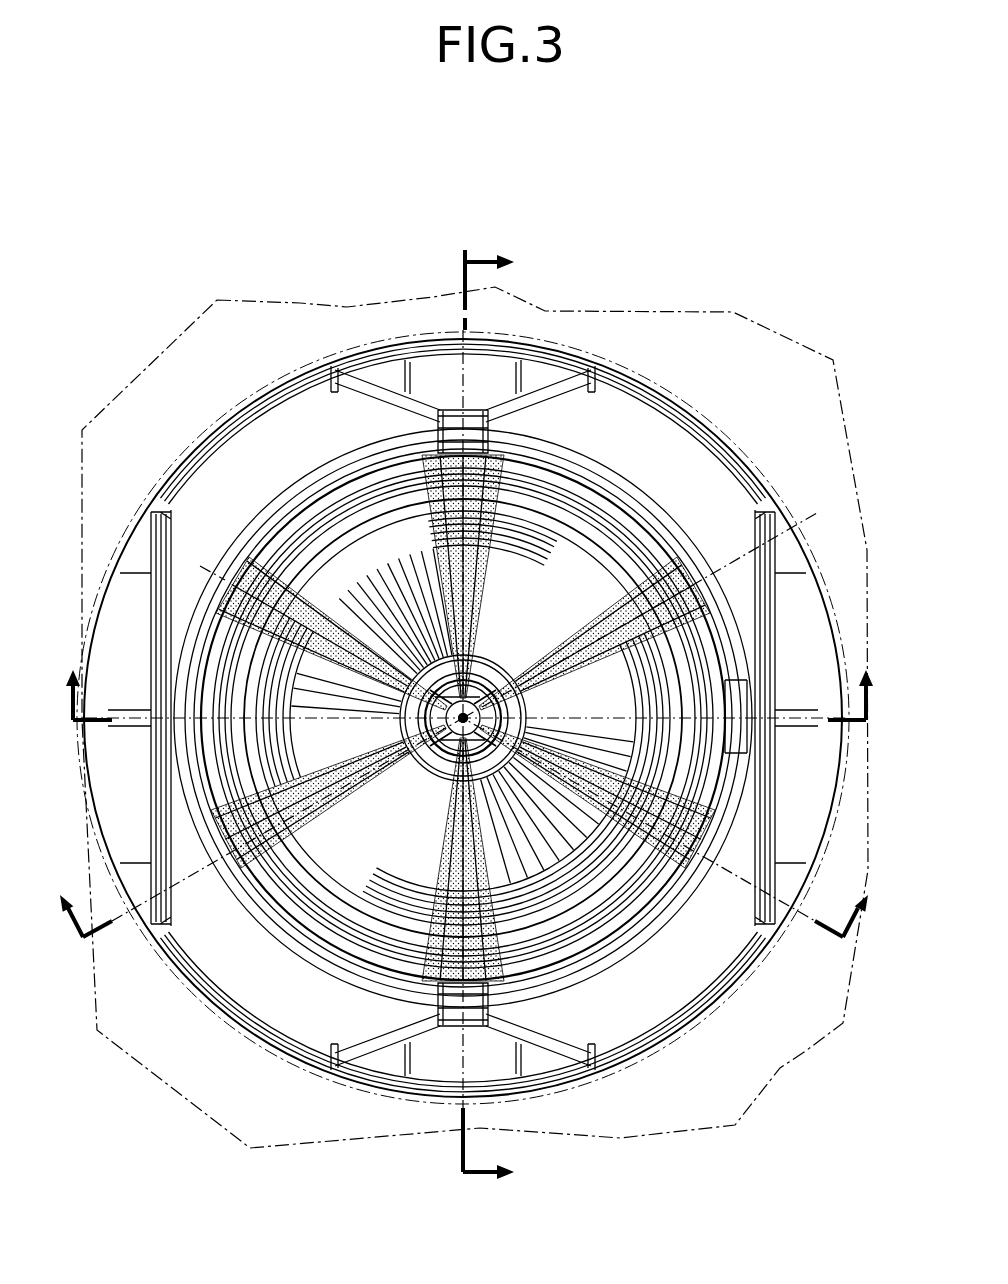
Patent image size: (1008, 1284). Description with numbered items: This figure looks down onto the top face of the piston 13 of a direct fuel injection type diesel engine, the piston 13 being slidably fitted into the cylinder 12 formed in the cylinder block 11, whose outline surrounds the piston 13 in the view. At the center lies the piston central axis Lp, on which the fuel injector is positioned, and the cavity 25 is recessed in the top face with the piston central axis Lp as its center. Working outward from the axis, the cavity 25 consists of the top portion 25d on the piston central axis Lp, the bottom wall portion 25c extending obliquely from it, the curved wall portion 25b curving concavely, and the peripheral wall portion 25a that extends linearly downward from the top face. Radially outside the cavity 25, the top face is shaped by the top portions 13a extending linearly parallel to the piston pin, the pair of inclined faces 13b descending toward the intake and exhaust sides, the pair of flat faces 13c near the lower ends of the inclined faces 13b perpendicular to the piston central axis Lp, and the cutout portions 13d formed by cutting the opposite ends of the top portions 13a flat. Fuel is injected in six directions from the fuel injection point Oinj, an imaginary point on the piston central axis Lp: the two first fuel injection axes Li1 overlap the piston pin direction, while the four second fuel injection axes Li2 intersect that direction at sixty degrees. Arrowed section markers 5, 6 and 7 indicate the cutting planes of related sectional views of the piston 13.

The cylinder block 11 is at (641, 312).
The cylinder 12 is at (640, 410).
The piston 13 is at (704, 420).
The top portions 13a is at (480, 428).
The inclined faces 13b is at (212, 937).
The flat faces 13c is at (128, 600).
The cutout portions 13d is at (488, 370).
The cavity 25 is at (553, 601).
The peripheral wall portion 25a is at (438, 457).
The curved wall portion 25b is at (306, 540).
The bottom wall portion 25c is at (340, 876).
The top portion 25d is at (447, 752).
The first fuel injection axes Li1 is at (480, 546).
The second fuel injection axes Li2 is at (348, 651).
The piston central axis Lp is at (465, 715).
The fuel injection point Oinj is at (520, 668).
The section line 5 is at (465, 722).
The section line 6 is at (464, 753).
The section line 7 is at (471, 724).